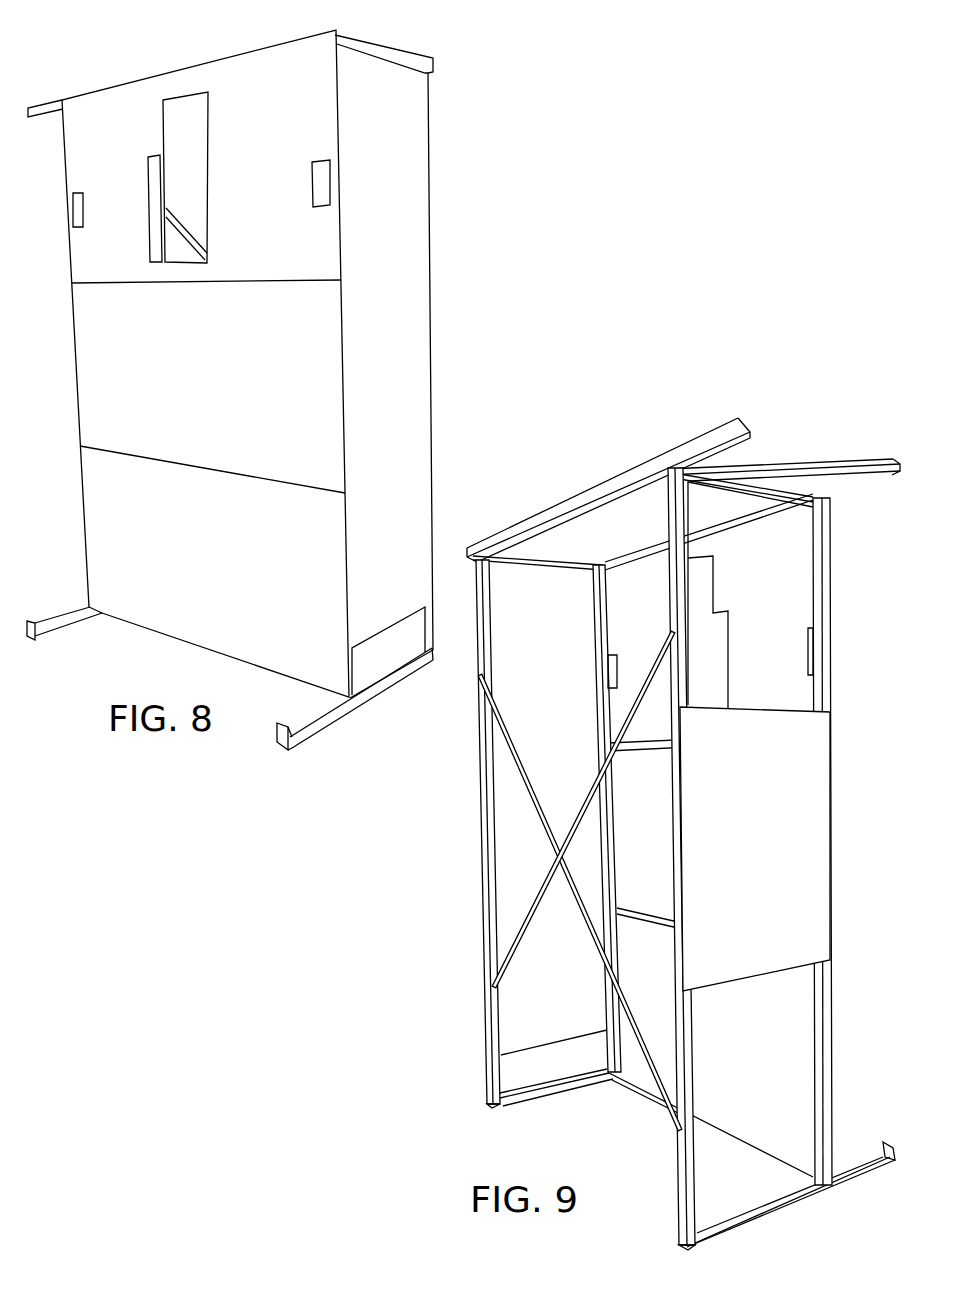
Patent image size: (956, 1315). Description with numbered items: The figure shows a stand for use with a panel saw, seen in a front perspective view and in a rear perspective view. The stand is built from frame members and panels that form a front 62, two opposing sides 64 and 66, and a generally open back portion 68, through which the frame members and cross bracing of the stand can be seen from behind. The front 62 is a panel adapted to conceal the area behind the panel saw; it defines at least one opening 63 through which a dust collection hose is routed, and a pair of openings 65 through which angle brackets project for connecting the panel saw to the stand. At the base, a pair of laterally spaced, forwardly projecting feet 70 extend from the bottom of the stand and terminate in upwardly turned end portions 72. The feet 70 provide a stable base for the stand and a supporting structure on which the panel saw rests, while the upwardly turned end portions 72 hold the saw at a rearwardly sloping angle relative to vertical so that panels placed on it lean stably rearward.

In FIG. 8, the front panel 62 is at (233, 381).
In FIG. 8, the opening 63 is at (207, 168).
In FIG. 8, the side 64 is at (397, 381).
In FIG. 8, the openings 65 is at (82, 200).
In FIG. 9, the side 66 is at (770, 865).
In FIG. 9, the open back portion 68 is at (505, 822).
In FIG. 8, the feet 70 is at (68, 620).
In FIG. 8, the upwardly turned end portions 72 is at (32, 640).